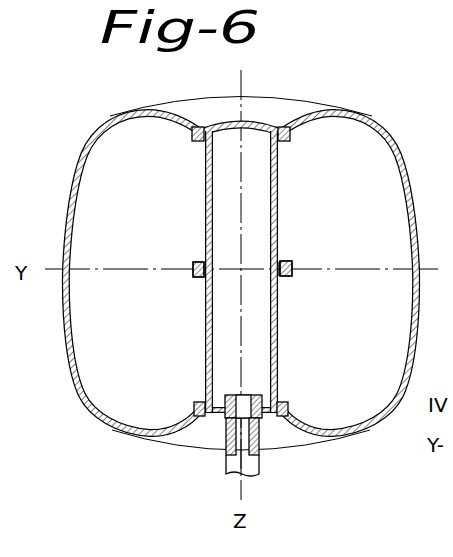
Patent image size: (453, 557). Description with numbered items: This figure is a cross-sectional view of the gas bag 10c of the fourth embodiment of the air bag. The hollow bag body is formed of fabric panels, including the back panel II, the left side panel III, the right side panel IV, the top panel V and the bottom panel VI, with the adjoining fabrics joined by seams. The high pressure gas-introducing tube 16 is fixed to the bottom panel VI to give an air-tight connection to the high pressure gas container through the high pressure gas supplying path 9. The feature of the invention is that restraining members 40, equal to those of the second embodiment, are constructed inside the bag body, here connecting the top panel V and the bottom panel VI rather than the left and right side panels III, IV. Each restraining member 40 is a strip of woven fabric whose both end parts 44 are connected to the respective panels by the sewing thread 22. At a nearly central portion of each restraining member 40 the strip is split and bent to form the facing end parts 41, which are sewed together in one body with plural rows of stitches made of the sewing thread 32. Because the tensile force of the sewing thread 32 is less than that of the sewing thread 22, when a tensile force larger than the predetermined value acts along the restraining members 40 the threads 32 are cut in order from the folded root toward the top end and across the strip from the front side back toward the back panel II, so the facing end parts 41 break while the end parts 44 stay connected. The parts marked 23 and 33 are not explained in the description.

The high pressure gas supplying path 9 is at (253, 470).
The gas bag 10c is at (389, 137).
The high pressure gas-introducing tube 16 is at (262, 403).
The sewing thread 22 is at (203, 127).
The bottom connecting flange 23 is at (277, 124).
The sewing thread 32 is at (192, 278).
The gap 33 is at (288, 281).
The restraining member 40 is at (205, 200).
The facing end part 41 is at (193, 264).
The end part of restraining member 44 is at (194, 138).
The back panel II is at (110, 397).
The left side panel III is at (416, 258).
The right side panel IV is at (64, 350).
The top panel V is at (298, 103).
The bottom panel VI is at (358, 432).